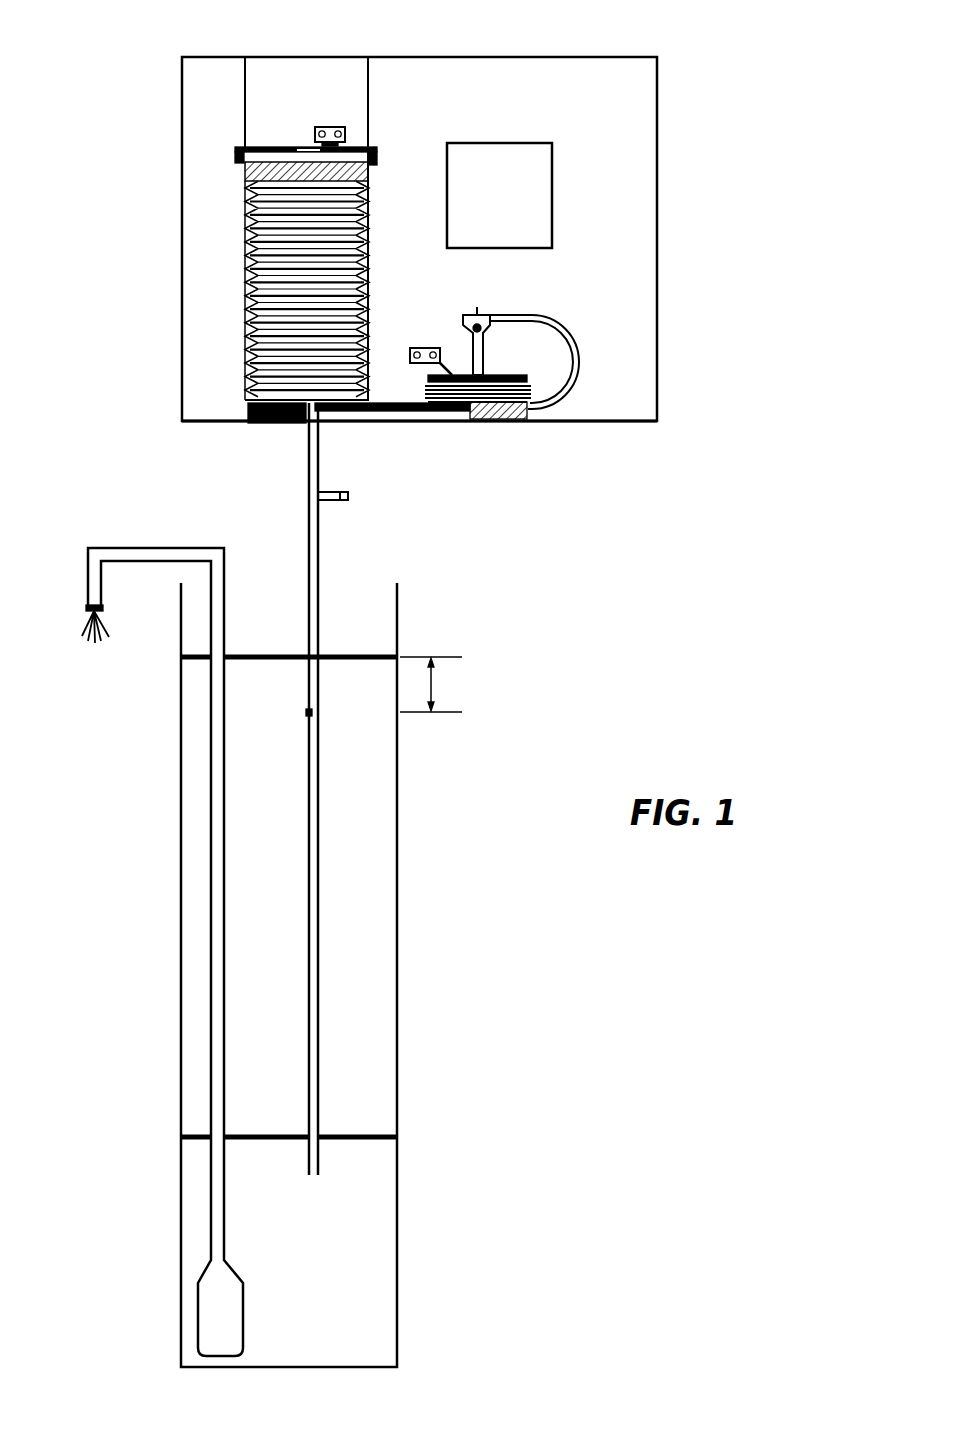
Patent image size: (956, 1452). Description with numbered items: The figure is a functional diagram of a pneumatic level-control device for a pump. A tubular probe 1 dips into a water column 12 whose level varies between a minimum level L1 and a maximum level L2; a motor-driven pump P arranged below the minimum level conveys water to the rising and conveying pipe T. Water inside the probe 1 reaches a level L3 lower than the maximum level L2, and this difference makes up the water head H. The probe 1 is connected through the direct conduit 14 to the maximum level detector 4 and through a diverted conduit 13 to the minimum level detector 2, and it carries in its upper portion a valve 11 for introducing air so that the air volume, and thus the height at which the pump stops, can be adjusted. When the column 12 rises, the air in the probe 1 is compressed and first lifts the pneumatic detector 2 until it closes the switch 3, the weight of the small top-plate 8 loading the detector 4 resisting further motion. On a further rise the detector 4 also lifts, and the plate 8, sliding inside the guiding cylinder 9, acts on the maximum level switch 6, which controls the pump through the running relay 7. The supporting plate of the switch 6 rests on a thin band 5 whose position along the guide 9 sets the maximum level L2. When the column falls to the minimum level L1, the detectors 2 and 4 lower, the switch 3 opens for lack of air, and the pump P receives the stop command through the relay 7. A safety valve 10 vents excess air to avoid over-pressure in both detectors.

The tubular probe 1 is at (308, 562).
The minimum level detector 2 is at (526, 385).
The switch 3 is at (432, 348).
The maximum level detector 4 is at (236, 290).
The thin band 5 is at (243, 168).
The maximum level switch 6 is at (327, 127).
The running relay 7 is at (524, 168).
The small top-plate 8 is at (243, 190).
The guiding cylinder 9 is at (243, 298).
The safety valve 10 is at (500, 326).
The valve 11 is at (348, 491).
The water column 12 is at (337, 912).
The diverted conduit 13 is at (372, 410).
The direct conduit 14 is at (305, 418).
The rising and conveying pipe T is at (138, 931).
The motor-driven pump P is at (162, 952).
The minimum level L1 is at (340, 1140).
The maximum level L2 is at (347, 655).
The level within the probe L3 is at (318, 713).
The water head H is at (432, 687).